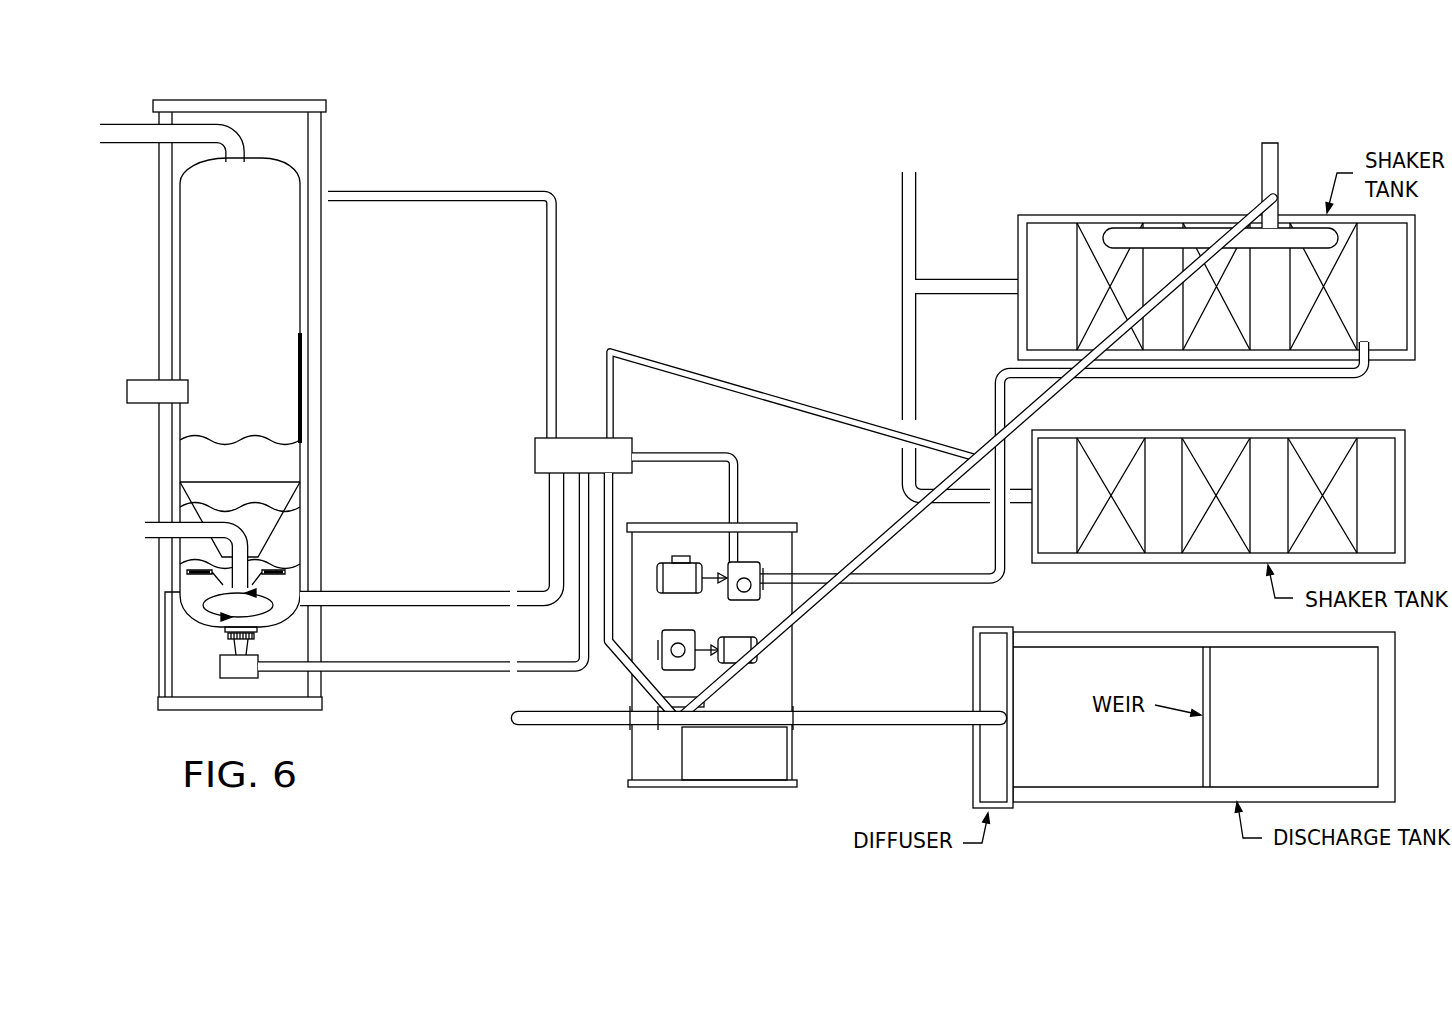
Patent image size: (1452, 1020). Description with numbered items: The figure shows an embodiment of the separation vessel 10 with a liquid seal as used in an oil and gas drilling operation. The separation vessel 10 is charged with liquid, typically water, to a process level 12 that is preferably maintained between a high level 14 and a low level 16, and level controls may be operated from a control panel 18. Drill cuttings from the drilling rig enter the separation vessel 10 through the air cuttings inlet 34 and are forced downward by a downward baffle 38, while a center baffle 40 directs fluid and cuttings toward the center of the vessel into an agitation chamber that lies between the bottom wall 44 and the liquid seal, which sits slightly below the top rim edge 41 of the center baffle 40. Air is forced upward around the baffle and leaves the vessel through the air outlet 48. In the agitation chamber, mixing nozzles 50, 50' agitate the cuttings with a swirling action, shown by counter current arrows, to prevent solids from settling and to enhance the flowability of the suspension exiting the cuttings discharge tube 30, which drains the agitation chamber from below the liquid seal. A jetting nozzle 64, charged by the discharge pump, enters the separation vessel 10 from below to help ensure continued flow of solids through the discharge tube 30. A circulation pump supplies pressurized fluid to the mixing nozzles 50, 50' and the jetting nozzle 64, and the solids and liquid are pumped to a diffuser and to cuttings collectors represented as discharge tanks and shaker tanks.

The separation vessel 10 is at (262, 158).
The process level 12 is at (300, 505).
The high level 14 is at (300, 437).
The low level 16 is at (300, 568).
The control panel 18 is at (712, 787).
The cuttings discharge tube 30 is at (145, 528).
The air cuttings inlet 34 is at (127, 390).
The downward baffle 38 is at (296, 352).
The center baffle 40 is at (270, 540).
The top rim edge 41 is at (300, 482).
The bottom wall 44 is at (203, 622).
The air outlet 48 is at (132, 124).
The mixing nozzle 50 is at (165, 573).
The mixing nozzle 50' is at (277, 613).
The jetting nozzle 64 is at (413, 671).